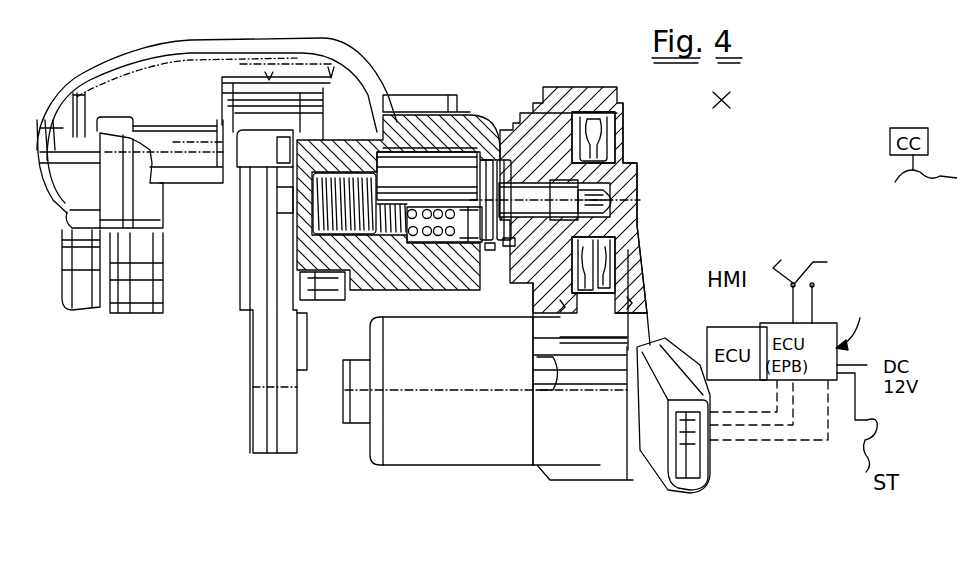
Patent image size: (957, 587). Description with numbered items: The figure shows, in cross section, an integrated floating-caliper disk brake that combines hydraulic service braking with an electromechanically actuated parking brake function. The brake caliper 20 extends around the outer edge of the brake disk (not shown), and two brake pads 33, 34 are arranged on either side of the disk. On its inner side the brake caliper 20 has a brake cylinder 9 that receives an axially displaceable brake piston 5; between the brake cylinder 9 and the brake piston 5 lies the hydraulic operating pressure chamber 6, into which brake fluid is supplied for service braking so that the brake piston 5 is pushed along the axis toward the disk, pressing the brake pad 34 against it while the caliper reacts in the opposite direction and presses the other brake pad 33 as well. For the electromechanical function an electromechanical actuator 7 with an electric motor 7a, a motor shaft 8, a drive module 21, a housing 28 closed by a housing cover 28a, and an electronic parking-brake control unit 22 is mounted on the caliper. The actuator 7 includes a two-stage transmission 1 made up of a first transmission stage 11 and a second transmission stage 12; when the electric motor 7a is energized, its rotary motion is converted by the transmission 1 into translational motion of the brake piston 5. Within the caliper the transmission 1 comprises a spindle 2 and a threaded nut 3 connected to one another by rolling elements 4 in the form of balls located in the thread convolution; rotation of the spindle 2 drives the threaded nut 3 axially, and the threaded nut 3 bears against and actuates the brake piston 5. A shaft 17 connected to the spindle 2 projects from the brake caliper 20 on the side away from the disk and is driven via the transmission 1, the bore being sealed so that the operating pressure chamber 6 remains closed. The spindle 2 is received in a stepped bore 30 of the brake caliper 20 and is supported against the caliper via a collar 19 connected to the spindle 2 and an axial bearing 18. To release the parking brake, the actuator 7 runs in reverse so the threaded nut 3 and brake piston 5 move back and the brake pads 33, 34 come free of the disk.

The transmission 1 is at (620, 247).
The spindle 2 is at (343, 177).
The threaded nut 3 is at (393, 167).
The rolling element 4 is at (407, 243).
The brake piston 5 is at (480, 157).
The hydraulic operating pressure chamber 6 is at (515, 185).
The electromechanical actuator 7 is at (648, 280).
The electric motor 7a is at (485, 391).
The motor shaft 8 is at (600, 387).
The brake cylinder 9 is at (437, 148).
The transmission stage 11 is at (660, 305).
The transmission stage 12 is at (678, 246).
The shaft 17 is at (570, 193).
The axial bearing 18 is at (508, 246).
The collar 19 is at (490, 250).
The brake caliper 20 is at (397, 137).
The drive module 21 is at (590, 353).
The control unit 22 is at (825, 312).
The housing 28 is at (617, 123).
The housing cover 28a is at (645, 340).
The stepped bore 30 is at (528, 200).
The brake pad 33 is at (160, 273).
The brake pad 34 is at (247, 260).